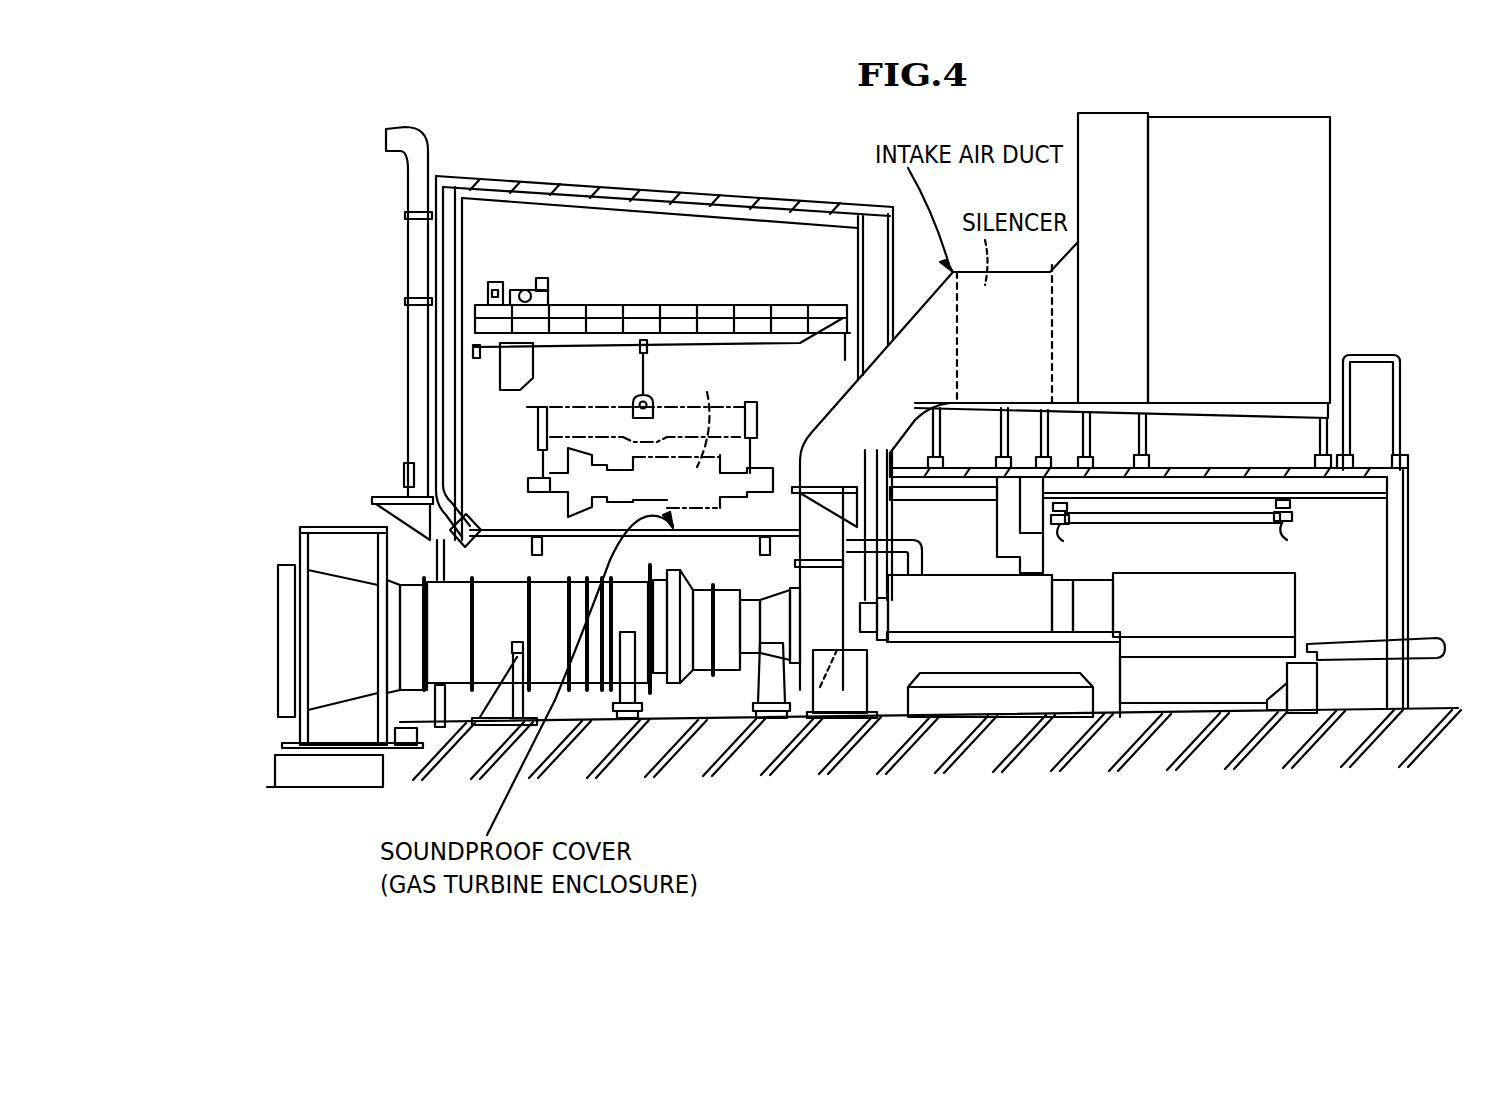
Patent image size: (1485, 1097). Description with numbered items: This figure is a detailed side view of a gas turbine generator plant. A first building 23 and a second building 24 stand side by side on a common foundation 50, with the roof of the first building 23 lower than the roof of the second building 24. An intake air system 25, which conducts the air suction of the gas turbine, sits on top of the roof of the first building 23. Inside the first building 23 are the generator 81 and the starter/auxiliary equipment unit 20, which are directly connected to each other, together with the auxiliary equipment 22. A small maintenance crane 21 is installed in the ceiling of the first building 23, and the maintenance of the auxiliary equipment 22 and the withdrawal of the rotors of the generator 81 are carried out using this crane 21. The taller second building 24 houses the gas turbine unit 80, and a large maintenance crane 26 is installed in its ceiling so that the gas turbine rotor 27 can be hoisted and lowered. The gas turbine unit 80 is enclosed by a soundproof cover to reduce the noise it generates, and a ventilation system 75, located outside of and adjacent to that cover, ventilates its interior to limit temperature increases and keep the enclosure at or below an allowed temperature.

The starter/auxiliary equipment unit 20 is at (1140, 683).
The small maintenance crane 21 is at (1097, 521).
The auxiliary equipment 22 is at (1233, 620).
The first building 23 is at (1208, 465).
The second building 24 is at (574, 187).
The intake air system 25 is at (1168, 125).
The large maintenance crane 26 is at (643, 307).
The gas turbine rotor 27 is at (643, 353).
The foundation 50 is at (960, 790).
The ventilation system 75 is at (405, 352).
The gas turbine unit 80 is at (680, 677).
The generator 81 is at (933, 603).